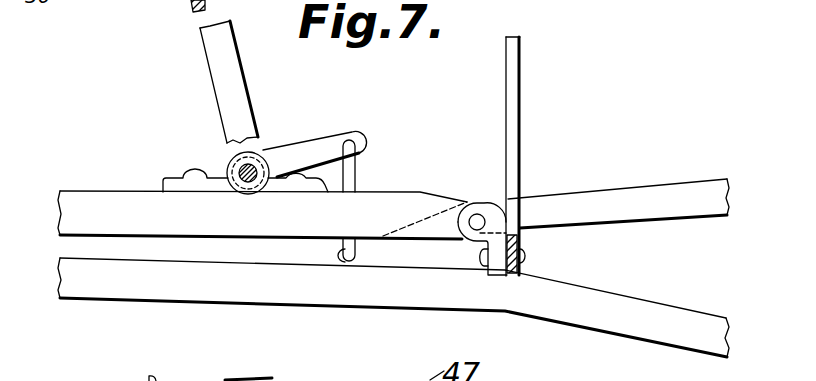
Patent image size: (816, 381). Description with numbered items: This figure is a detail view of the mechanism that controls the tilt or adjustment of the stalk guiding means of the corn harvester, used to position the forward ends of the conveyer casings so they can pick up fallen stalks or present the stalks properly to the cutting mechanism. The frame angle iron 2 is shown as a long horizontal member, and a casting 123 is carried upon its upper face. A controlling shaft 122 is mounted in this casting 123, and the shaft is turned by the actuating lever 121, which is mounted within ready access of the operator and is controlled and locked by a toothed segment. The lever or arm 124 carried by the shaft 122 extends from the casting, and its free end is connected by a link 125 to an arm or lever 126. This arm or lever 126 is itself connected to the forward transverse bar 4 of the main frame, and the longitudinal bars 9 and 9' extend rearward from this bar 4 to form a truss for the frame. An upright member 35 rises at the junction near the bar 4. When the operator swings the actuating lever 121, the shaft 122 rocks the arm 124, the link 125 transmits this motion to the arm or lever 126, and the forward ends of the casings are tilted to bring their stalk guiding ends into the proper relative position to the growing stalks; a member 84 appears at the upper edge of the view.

The angle iron 2 is at (262, 215).
The longitudinal bar 9 is at (618, 187).
The longitudinal bar 9' is at (676, 349).
The arm or lever 126 is at (422, 258).
The vertical rod 35 is at (512, 173).
The transverse bar 4 is at (521, 233).
The actuating lever 121 is at (233, 107).
The controlling shaft 122 is at (250, 167).
The casting 123 is at (218, 171).
The lever or arm 124 is at (317, 147).
The link 125 is at (357, 177).
The member 84 is at (187, 3).